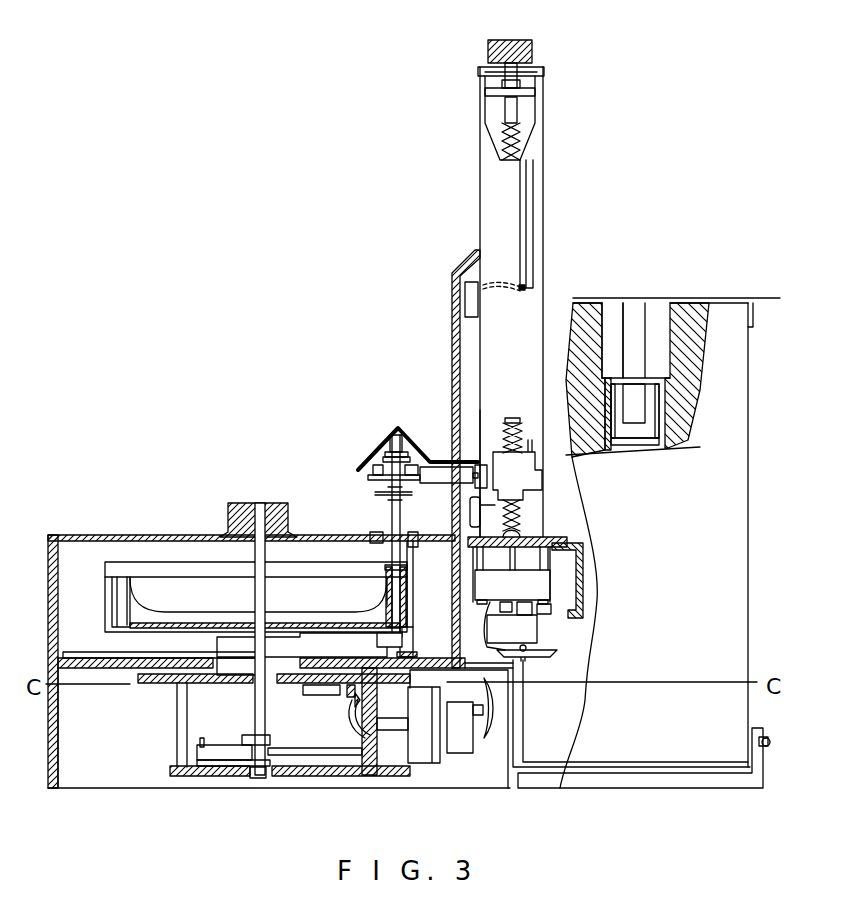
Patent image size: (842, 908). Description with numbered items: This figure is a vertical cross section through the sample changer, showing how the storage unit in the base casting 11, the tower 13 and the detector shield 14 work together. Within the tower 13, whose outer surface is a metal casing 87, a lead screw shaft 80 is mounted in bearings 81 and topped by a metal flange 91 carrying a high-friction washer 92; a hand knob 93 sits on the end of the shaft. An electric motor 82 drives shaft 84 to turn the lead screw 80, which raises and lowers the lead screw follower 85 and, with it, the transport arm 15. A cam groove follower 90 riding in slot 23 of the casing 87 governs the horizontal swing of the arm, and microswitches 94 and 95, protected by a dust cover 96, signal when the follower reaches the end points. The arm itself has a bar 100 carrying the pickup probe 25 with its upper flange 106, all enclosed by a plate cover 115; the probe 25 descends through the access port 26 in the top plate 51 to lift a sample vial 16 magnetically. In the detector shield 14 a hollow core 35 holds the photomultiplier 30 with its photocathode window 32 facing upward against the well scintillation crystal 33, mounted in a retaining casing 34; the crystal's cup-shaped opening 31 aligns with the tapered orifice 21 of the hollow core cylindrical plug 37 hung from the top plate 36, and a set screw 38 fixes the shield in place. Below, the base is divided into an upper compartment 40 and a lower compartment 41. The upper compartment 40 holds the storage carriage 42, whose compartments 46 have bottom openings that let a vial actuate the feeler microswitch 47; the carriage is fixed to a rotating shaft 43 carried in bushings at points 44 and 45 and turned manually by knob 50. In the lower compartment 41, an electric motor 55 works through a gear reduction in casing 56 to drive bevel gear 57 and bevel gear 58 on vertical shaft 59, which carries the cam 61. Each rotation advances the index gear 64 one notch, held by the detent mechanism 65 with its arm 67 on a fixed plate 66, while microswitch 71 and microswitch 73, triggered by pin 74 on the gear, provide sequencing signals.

The base casting 11 is at (48, 633).
The tower 13 is at (543, 192).
The detector shield 14 is at (748, 520).
The transport arm 15 is at (430, 453).
The sample vial 16 is at (403, 592).
The orifice 21 is at (634, 308).
The slot 23 is at (530, 234).
The pickup probe 25 is at (392, 510).
The access port 26 is at (413, 534).
The photomultiplier 30 is at (650, 454).
The cup-shaped cylindrical opening 31 is at (524, 289).
The photocathode window 32 is at (662, 445).
The well scintillation crystal 33 is at (662, 408).
The retaining casing 34 is at (606, 406).
The hollow core 35 is at (608, 418).
The top plate 36 is at (700, 298).
The hollow core cylindrical plug 37 is at (612, 320).
The set screw 38 is at (768, 742).
The upper compartment 40 is at (80, 562).
The lower compartment 41 is at (100, 768).
The storage carriage 42 is at (140, 629).
The rotating shaft 43 is at (265, 566).
The bushing point 44 is at (295, 683).
The bushing point 45 is at (270, 777).
The compartment 46 is at (112, 608).
The feeler microswitch 47 is at (377, 640).
The knob 50 is at (252, 503).
The top plate 51 is at (133, 537).
The electric motor 55 is at (458, 742).
The casing 56 is at (420, 704).
The bevel gear 57 is at (380, 776).
The bevel gear 58 is at (356, 703).
The vertical shaft 59 is at (356, 720).
The cam 61 is at (352, 697).
The index gear 64 is at (220, 750).
The detent mechanism 65 is at (187, 742).
The fixed plate 66 is at (172, 777).
The arm 67 is at (343, 751).
The microswitch 71 is at (310, 695).
The microswitch 73 is at (250, 736).
The pin 74 is at (202, 738).
The lead screw shaft 80 is at (518, 120).
The bearing 81 is at (545, 541).
The electric motor 82 is at (541, 68).
The shaft 84 is at (528, 572).
The lead screw follower 85 is at (535, 479).
The metal casing 87 is at (480, 193).
The cam groove follower 90 is at (480, 452).
The metal flange 91 is at (535, 90).
The washer 92 is at (503, 94).
The plunger 93 is at (514, 42).
The microswitch 94 is at (487, 285).
The microswitch 95 is at (470, 525).
The dust cover 96 is at (452, 304).
The bar 100 is at (448, 476).
The flange 106 is at (375, 493).
The plate cover 115 is at (358, 446).